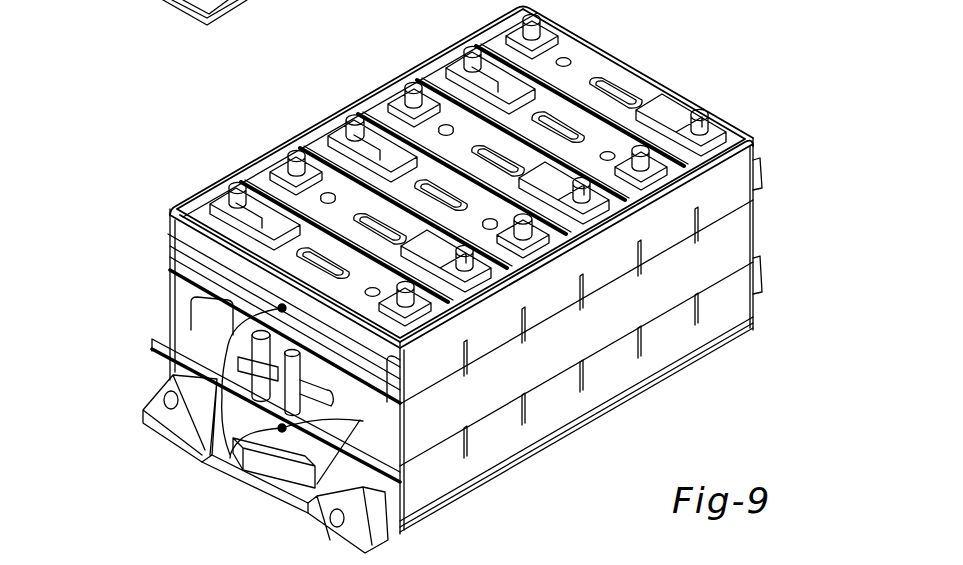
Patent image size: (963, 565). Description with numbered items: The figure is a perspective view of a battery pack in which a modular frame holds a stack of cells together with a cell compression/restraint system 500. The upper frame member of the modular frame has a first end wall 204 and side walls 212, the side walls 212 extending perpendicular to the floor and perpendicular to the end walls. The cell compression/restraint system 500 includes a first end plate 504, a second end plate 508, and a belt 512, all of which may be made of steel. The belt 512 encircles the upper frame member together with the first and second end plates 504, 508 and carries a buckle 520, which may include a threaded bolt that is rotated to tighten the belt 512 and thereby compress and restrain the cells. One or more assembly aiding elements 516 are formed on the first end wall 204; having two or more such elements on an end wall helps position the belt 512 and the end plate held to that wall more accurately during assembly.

The cell compression/restraint system 500 is at (134, 371).
The second end plate 508 is at (766, 168).
The first end wall 204 is at (195, 237).
The belt 512 is at (712, 261).
The side walls 212 is at (668, 337).
The first end plate 504 is at (175, 352).
The buckle 520 is at (207, 318).
The assembly aiding element 516 is at (230, 455).